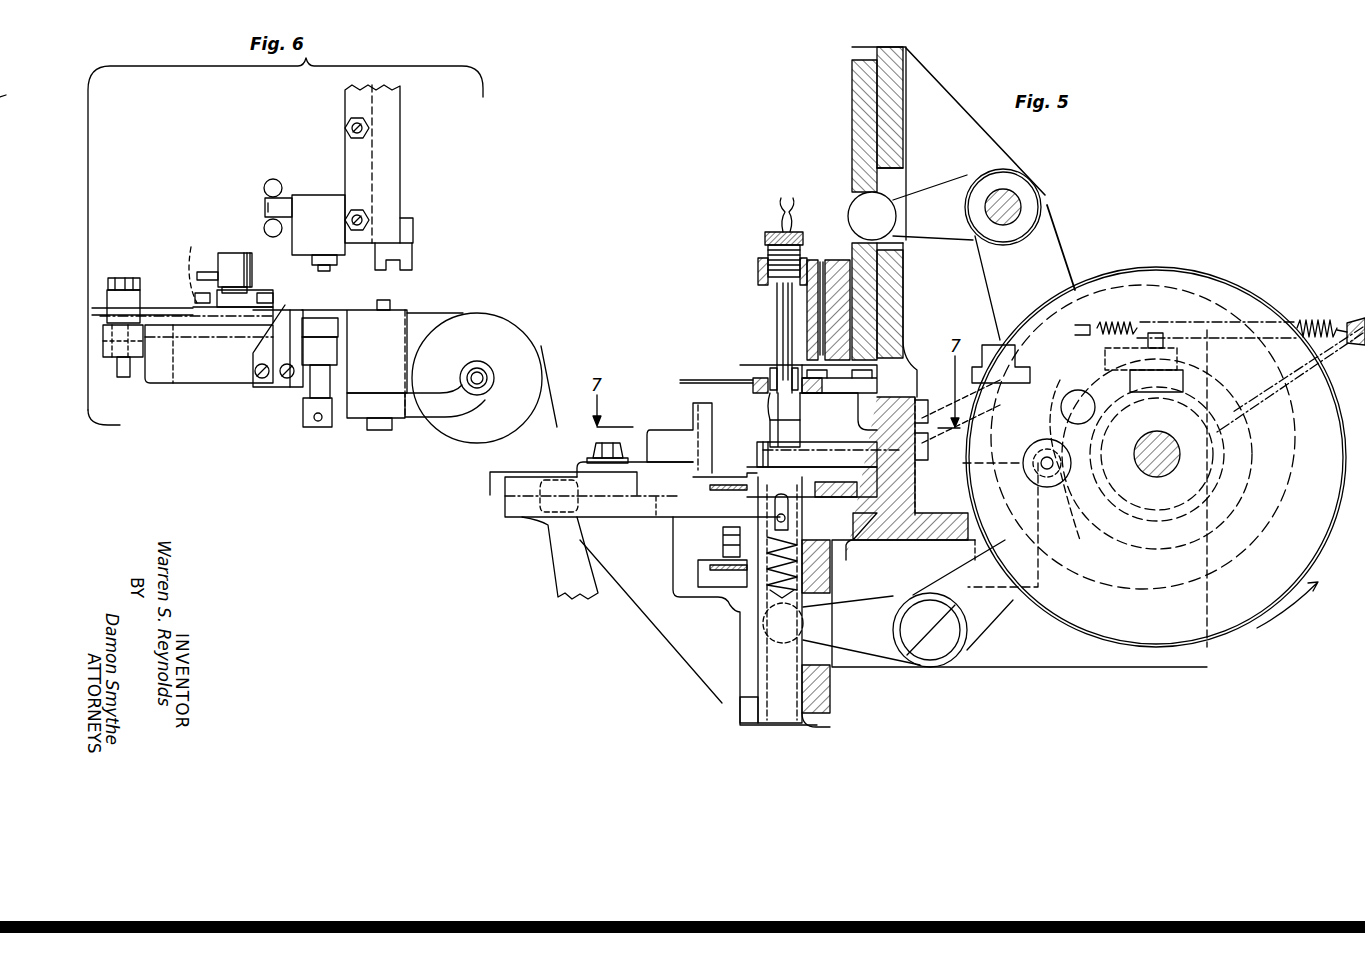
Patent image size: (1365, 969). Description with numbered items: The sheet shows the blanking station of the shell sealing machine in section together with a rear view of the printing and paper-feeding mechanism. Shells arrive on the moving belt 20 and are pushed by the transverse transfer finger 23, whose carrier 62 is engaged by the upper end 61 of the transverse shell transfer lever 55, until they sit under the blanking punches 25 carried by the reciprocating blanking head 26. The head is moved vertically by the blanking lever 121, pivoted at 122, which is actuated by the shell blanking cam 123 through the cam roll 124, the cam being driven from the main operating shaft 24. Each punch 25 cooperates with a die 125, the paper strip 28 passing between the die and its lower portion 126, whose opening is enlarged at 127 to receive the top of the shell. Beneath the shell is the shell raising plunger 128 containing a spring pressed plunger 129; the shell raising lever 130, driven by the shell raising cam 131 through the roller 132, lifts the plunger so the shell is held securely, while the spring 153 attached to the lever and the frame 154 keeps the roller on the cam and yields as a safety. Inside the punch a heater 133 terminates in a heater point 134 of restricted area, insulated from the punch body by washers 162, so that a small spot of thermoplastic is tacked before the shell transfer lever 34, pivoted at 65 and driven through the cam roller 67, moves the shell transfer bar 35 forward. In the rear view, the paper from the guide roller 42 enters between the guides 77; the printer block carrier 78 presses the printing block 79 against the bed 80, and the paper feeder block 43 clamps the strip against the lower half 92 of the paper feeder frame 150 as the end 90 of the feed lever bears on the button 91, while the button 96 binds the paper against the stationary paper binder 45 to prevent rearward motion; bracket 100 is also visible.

In FIG. 5, the moving belt 20 is at (727, 485).
In FIG. 5, the transverse transfer finger 23 is at (690, 413).
In FIG. 5, the main operating shaft 24 is at (1152, 465).
In FIG. 5, the blanking punch 25 is at (770, 303).
In FIG. 5, the reciprocating blanking head 26 is at (860, 110).
In FIG. 6, the strip of paper 28 is at (445, 314).
In FIG. 5, the shell transfer lever 34 is at (943, 420).
In FIG. 5, the shell transfer bar 35 is at (843, 500).
In FIG. 6, the guide roller 42 is at (505, 338).
In FIG. 6, the paper feeder block 43 is at (240, 293).
In FIG. 6, the paper binder 45 is at (142, 278).
In FIG. 5, the transverse shell transfer lever 55 is at (560, 573).
In FIG. 5, the upper end of lever 61 is at (543, 497).
In FIG. 5, the carrier 62 is at (530, 476).
In FIG. 5, the pivot 65 is at (998, 340).
In FIG. 5, the cam roller 67 is at (1188, 387).
In FIG. 6, the guides 77 is at (405, 311).
In FIG. 5, the guides 77 is at (680, 380).
In FIG. 6, the printer block carrier 78 is at (310, 203).
In FIG. 6, the printing block 79 is at (318, 262).
In FIG. 6, the bed 80 is at (325, 323).
In FIG. 6, the end of lever 90 is at (224, 260).
In FIG. 6, the button 91 is at (185, 265).
In FIG. 6, the lower half of paper feeder frame 92 is at (198, 323).
In FIG. 6, the button 96 is at (112, 325).
In FIG. 6, the mounting bracket 100 is at (388, 120).
In FIG. 5, the blanking lever 121 is at (1030, 243).
In FIG. 5, the pivot 122 is at (1020, 205).
In FIG. 5, the shell blanking cam 123 is at (1232, 292).
In FIG. 5, the cam roll 124 is at (1025, 483).
In FIG. 5, the die 125 is at (760, 380).
In FIG. 5, the lower portion of the die 126 is at (768, 393).
In FIG. 5, the enlarged opening 127 is at (790, 405).
In FIG. 5, the shell raising plunger 128 is at (770, 672).
In FIG. 5, the spring pressed plunger 129 is at (723, 542).
In FIG. 5, the shell raising lever 130 is at (975, 632).
In FIG. 5, the shell raising cam 131 is at (1240, 503).
In FIG. 5, the roller 132 is at (1082, 392).
In FIG. 5, the heater 133 is at (783, 320).
In FIG. 5, the heater point 134 is at (765, 378).
In FIG. 6, the paper feeder frame 150 is at (195, 305).
In FIG. 5, the spring 153 is at (1312, 320).
In FIG. 5, the frame 154 is at (1355, 320).
In FIG. 5, the washers 162 is at (768, 288).